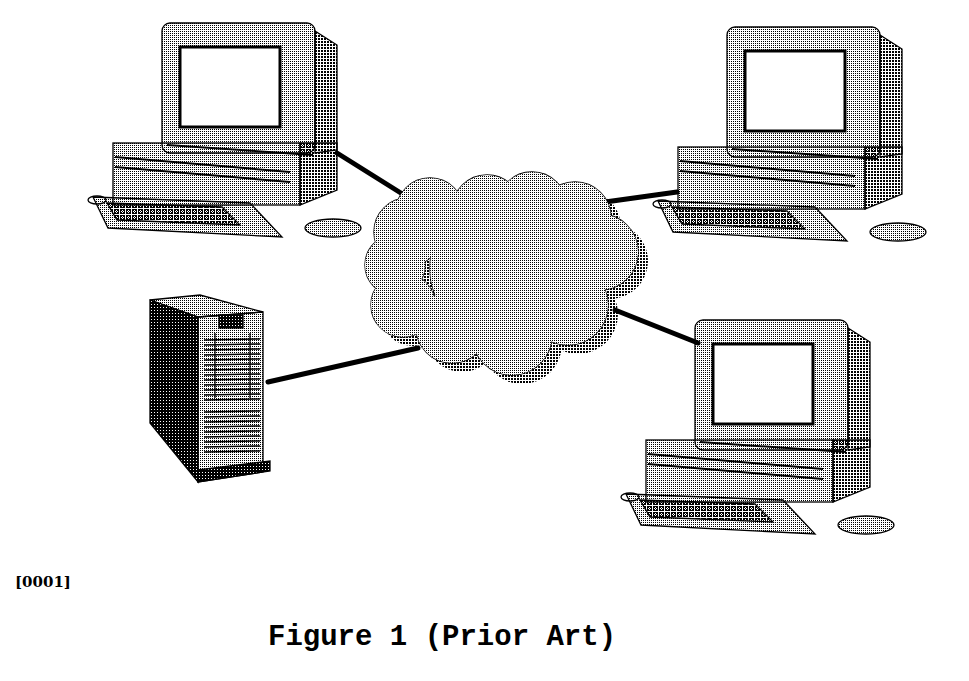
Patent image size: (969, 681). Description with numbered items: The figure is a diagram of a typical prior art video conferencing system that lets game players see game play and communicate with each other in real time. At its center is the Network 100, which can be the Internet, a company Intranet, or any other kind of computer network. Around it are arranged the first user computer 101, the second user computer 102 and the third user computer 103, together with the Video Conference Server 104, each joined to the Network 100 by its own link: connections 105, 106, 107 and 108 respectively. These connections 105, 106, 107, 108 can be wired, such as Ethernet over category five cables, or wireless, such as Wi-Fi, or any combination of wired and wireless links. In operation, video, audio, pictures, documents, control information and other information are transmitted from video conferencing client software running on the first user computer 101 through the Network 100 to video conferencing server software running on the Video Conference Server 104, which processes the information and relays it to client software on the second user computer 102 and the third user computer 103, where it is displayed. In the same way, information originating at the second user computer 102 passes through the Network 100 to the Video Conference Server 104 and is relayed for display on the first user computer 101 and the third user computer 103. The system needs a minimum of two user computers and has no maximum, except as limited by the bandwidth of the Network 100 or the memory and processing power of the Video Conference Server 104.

The Network 100 is at (493, 202).
The User 1 Computer 101 is at (305, 70).
The User 2 Computer 102 is at (737, 83).
The User 3 Computer 103 is at (688, 462).
The Video Conference Server 104 is at (245, 347).
The connection 105 is at (362, 168).
The connection 106 is at (617, 193).
The connection 107 is at (643, 317).
The connection 108 is at (337, 368).